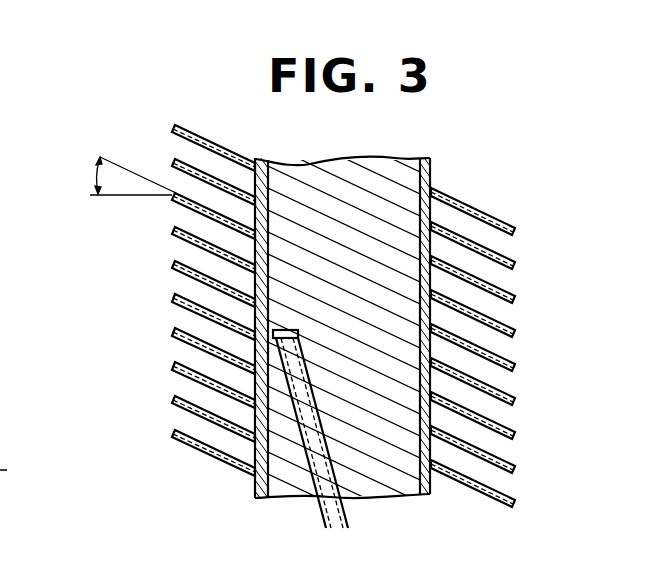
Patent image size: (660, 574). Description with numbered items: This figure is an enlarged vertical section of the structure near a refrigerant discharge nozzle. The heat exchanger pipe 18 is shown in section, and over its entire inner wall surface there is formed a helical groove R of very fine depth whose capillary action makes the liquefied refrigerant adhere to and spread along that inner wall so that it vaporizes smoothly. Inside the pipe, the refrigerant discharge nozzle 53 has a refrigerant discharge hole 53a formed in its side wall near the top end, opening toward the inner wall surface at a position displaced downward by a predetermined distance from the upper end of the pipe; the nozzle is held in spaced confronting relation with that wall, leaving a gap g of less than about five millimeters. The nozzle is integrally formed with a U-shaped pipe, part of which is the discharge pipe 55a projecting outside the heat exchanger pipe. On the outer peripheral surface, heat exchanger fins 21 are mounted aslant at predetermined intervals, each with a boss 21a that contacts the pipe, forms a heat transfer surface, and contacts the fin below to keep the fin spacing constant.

The heat exchanger pipe 18 is at (431, 160).
The helical groove R is at (317, 178).
The heat exchanger fin 21 is at (586, 214).
The boss 21a is at (433, 210).
The refrigerant discharge nozzle 53 is at (258, 311).
The refrigerant discharge hole 53a is at (273, 339).
The discharge pipe 55a is at (350, 510).
The gap g is at (268, 330).